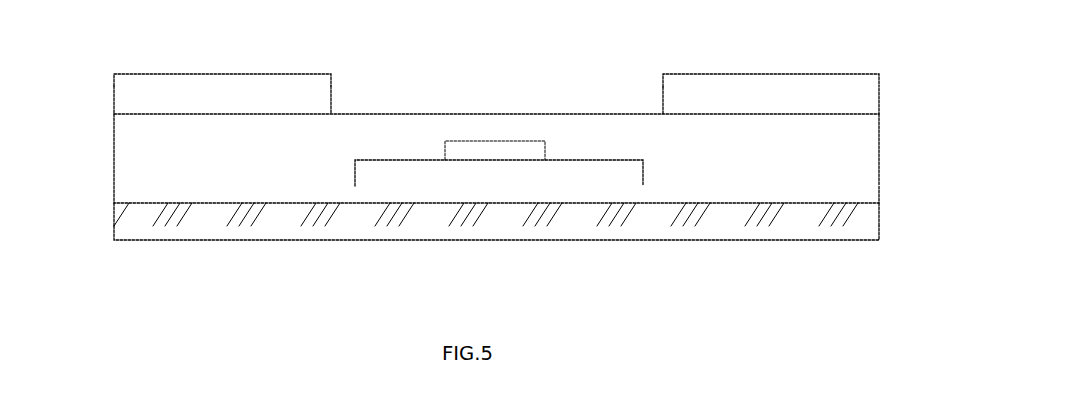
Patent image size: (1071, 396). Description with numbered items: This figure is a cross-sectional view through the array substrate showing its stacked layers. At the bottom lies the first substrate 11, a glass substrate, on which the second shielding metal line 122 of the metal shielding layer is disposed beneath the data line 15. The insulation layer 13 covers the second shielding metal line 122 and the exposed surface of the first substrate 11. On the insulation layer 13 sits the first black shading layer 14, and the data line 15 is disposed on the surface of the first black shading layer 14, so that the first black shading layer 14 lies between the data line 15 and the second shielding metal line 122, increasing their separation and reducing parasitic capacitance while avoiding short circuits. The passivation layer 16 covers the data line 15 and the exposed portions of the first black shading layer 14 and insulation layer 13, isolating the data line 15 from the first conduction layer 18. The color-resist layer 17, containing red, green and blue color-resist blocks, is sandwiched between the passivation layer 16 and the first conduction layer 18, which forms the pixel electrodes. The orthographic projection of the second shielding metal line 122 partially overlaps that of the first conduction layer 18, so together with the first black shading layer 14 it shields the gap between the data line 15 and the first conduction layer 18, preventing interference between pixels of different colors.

The first substrate 11 is at (150, 233).
The second shielding metal line 122 is at (657, 215).
The insulation layer 13 is at (150, 195).
The first black shading layer 14 is at (623, 175).
The data line 15 is at (512, 151).
The passivation layer 16 is at (152, 154).
The color-resist layer 17 is at (150, 103).
The first conduction layer 18 is at (152, 79).